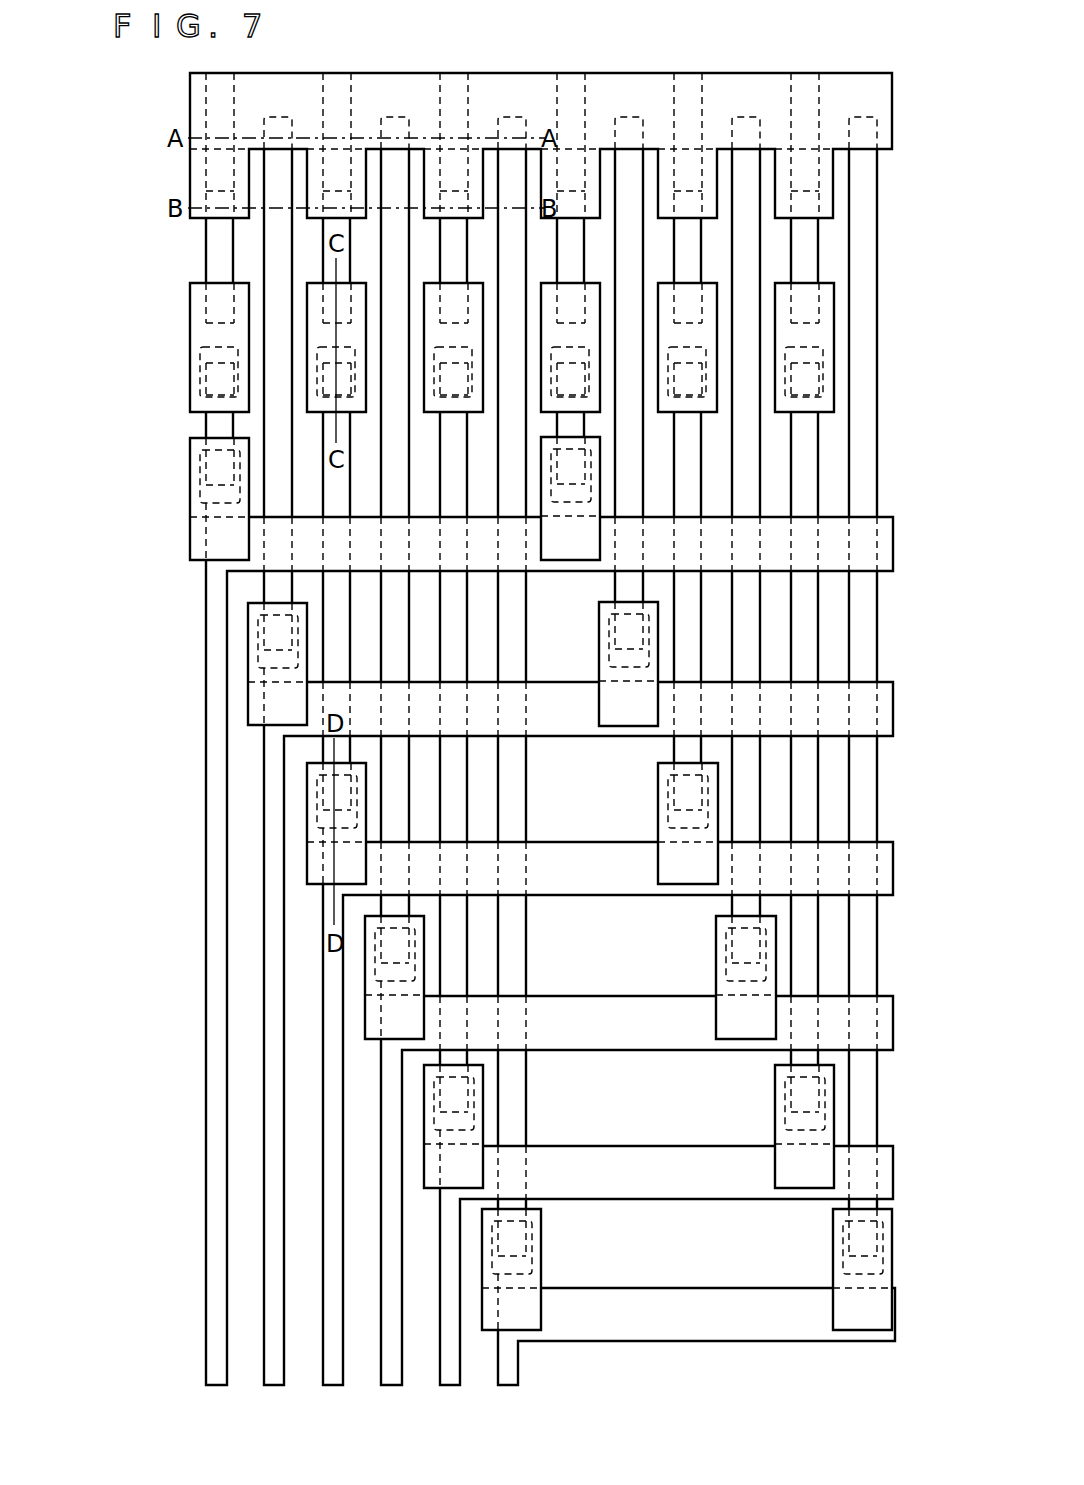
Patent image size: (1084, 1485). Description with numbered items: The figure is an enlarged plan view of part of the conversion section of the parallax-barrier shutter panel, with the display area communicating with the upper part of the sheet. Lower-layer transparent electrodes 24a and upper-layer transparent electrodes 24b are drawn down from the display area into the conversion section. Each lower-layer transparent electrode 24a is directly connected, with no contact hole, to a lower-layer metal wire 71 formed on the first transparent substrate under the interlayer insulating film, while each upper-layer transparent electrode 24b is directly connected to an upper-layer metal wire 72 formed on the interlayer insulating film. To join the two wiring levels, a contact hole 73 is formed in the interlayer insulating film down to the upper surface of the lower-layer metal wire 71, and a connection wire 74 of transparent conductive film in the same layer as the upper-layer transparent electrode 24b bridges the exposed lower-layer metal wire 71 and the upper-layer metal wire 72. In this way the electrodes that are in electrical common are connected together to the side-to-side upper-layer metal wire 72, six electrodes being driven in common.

The lower-layer transparent electrode 24a is at (265, 97).
The upper-layer transparent electrode 24b is at (215, 170).
The lower-layer metal wire 71 is at (272, 243).
The upper-layer metal wire 72 is at (213, 267).
The contact hole 73 is at (215, 380).
The connection wire 74 is at (200, 337).